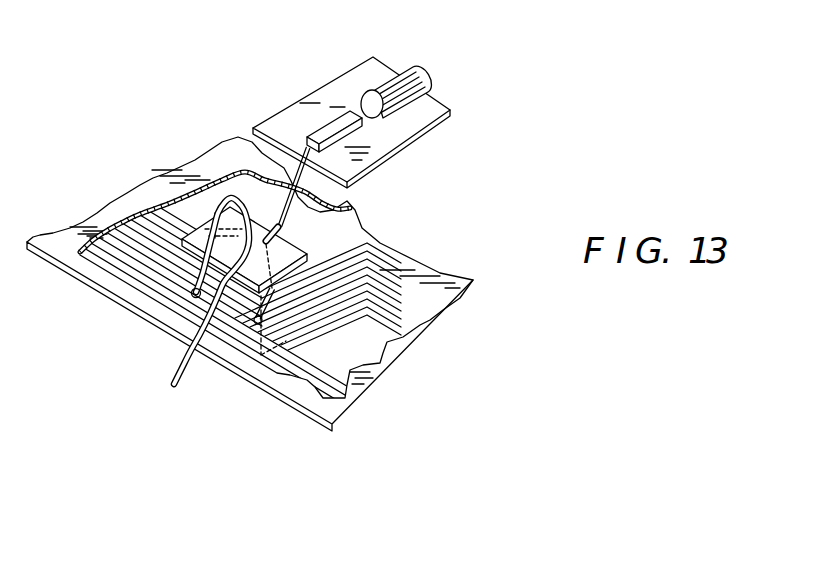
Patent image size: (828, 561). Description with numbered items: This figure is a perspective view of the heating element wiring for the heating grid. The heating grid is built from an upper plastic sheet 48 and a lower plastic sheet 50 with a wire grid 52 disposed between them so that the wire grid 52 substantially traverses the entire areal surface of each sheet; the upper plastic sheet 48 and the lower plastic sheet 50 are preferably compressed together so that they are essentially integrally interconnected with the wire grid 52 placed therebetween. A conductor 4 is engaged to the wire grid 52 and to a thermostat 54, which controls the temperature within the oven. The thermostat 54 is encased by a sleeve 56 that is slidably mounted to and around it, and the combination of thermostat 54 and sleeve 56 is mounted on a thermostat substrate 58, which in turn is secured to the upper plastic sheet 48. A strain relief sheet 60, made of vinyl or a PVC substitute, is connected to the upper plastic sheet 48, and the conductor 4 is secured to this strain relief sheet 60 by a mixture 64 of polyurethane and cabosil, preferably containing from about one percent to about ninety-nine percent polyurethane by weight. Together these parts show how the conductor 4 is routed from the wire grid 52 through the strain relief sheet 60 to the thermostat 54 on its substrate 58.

The conductor 4 is at (188, 363).
The upper plastic sheet 48 is at (106, 257).
The lower plastic sheet 50 is at (332, 421).
The wire grid 52 is at (182, 397).
The thermostat 54 is at (365, 112).
The sleeve 56 is at (428, 92).
The thermostat substrate 58 is at (452, 110).
The strain relief sheet 60 is at (213, 232).
The mixture of polyurethane and cabosil 64 is at (256, 252).